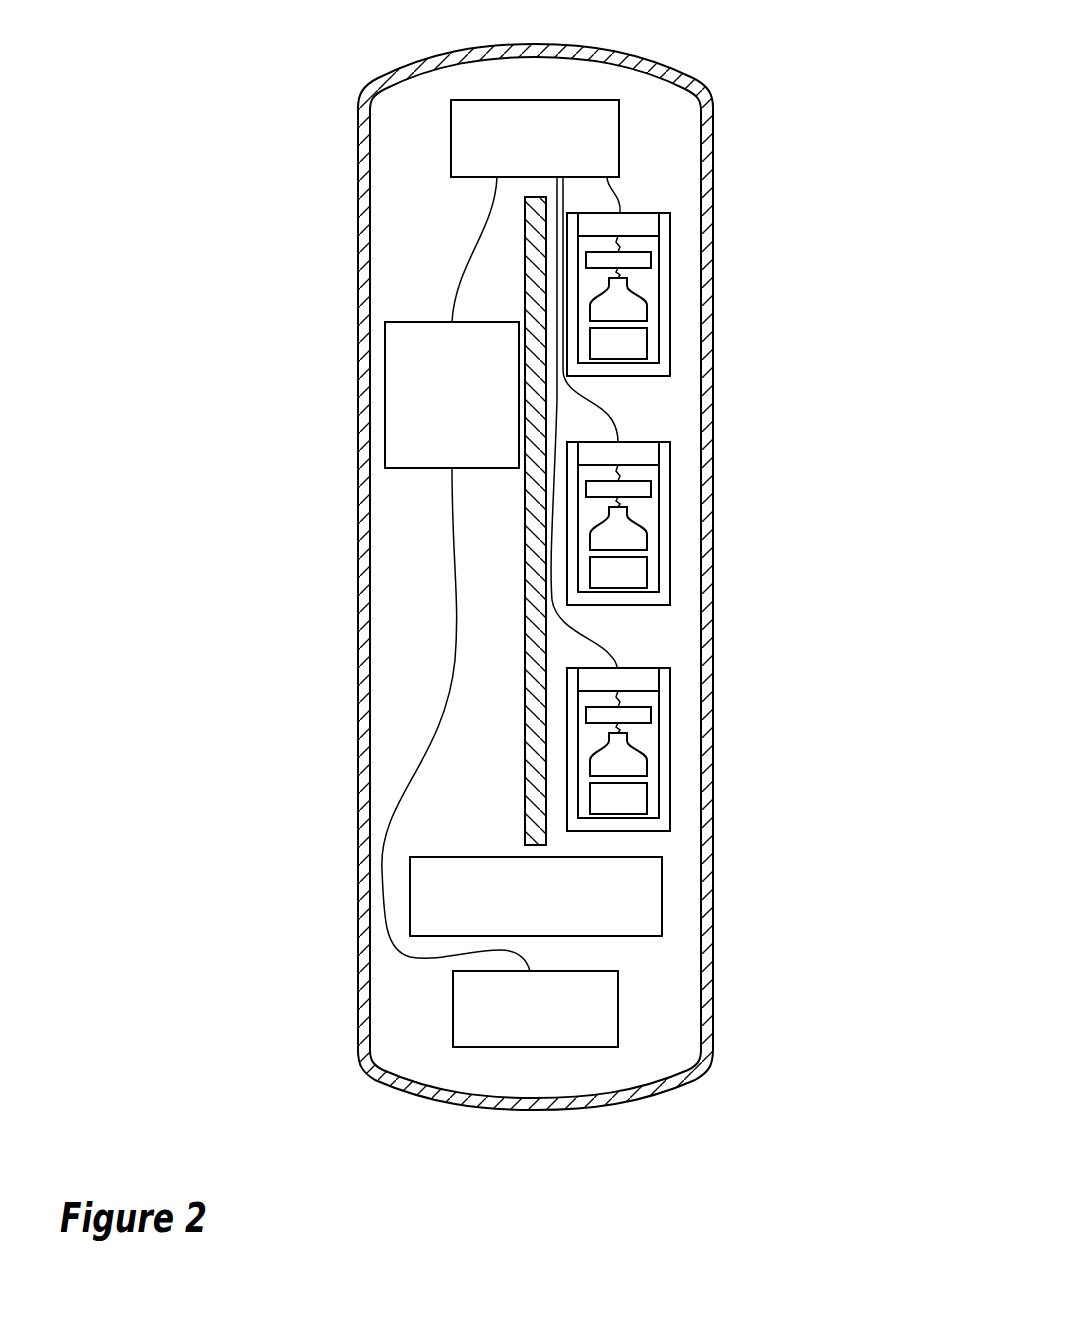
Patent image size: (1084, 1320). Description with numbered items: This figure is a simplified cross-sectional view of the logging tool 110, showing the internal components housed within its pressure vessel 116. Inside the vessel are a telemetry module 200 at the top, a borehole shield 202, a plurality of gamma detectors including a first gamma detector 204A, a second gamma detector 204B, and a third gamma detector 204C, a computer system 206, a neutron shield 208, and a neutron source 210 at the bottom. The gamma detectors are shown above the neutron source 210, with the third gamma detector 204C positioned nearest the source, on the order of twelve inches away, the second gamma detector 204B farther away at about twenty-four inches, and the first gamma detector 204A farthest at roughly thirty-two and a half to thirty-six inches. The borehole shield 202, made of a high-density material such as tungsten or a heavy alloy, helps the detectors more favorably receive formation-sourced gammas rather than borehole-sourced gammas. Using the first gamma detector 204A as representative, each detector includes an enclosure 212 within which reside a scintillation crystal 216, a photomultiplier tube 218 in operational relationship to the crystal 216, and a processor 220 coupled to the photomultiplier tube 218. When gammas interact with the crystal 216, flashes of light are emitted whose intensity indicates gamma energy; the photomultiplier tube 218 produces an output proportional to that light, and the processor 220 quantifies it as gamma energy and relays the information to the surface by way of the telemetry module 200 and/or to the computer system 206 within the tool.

The logging tool 110 is at (826, 80).
The pressure vessel 116 is at (713, 220).
The telemetry module 200 is at (470, 177).
The borehole shield 202 is at (523, 300).
The first gamma detector 204A is at (701, 294).
The second gamma detector 204B is at (671, 519).
The third gamma detector 204C is at (671, 745).
The computer system 206 is at (473, 433).
The neutron shield 208 is at (663, 878).
The neutron source 210 is at (618, 1000).
The enclosure 212 is at (663, 267).
The crystal 216 is at (645, 347).
The photomultiplier tube 218 is at (648, 313).
The processor 220 is at (588, 258).